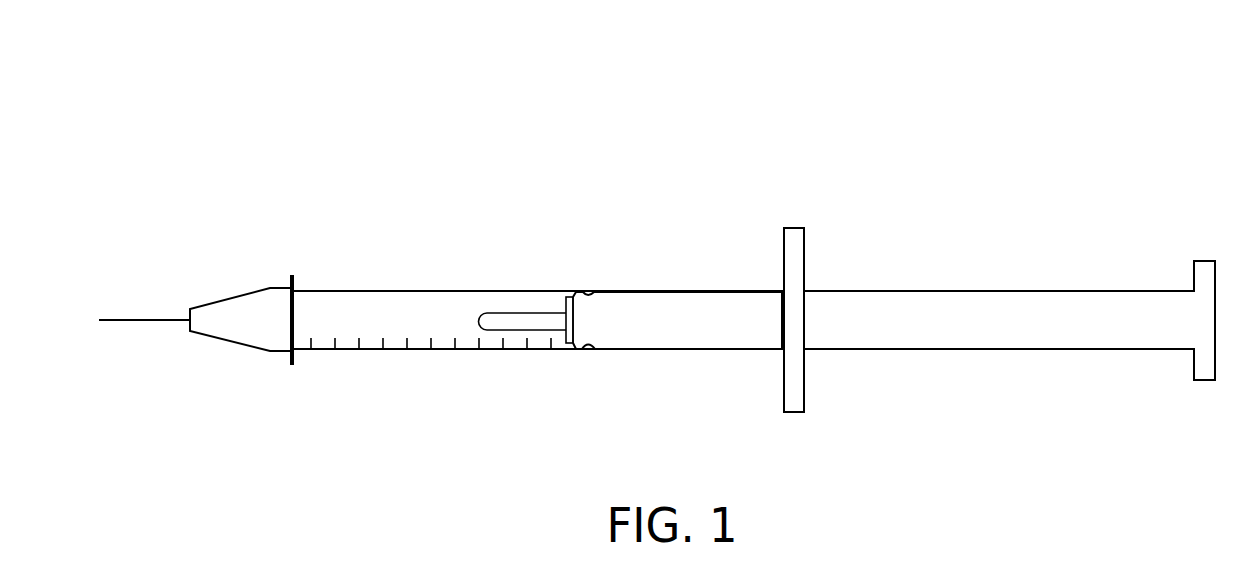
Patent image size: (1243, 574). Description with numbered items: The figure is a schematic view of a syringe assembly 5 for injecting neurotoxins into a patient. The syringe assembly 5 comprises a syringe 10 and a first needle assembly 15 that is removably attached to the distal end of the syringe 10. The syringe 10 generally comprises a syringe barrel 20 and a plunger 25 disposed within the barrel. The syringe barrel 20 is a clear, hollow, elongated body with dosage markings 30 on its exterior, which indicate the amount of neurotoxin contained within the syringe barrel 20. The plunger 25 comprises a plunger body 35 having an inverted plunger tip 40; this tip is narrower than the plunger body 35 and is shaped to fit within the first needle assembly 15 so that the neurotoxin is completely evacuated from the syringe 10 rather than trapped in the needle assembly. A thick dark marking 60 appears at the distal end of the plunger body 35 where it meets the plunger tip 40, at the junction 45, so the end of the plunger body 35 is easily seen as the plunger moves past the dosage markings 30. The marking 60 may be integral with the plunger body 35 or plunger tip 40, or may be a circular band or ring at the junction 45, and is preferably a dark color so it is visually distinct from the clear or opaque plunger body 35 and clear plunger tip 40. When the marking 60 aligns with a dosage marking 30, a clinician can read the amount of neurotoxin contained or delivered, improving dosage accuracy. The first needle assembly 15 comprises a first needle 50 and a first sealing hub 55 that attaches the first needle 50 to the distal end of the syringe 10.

The syringe assembly 5 is at (1098, 90).
The syringe 10 is at (1222, 200).
The first needle assembly 15 is at (208, 268).
The syringe barrel 20 is at (422, 292).
The plunger 25 is at (715, 362).
The dosage markings 30 is at (359, 352).
The plunger body 35 is at (645, 325).
The inverted plunger tip 40 is at (510, 320).
The junction 45 is at (568, 320).
The first needle 50 is at (141, 322).
The first sealing hub 55 is at (248, 351).
The marking 60 is at (575, 322).